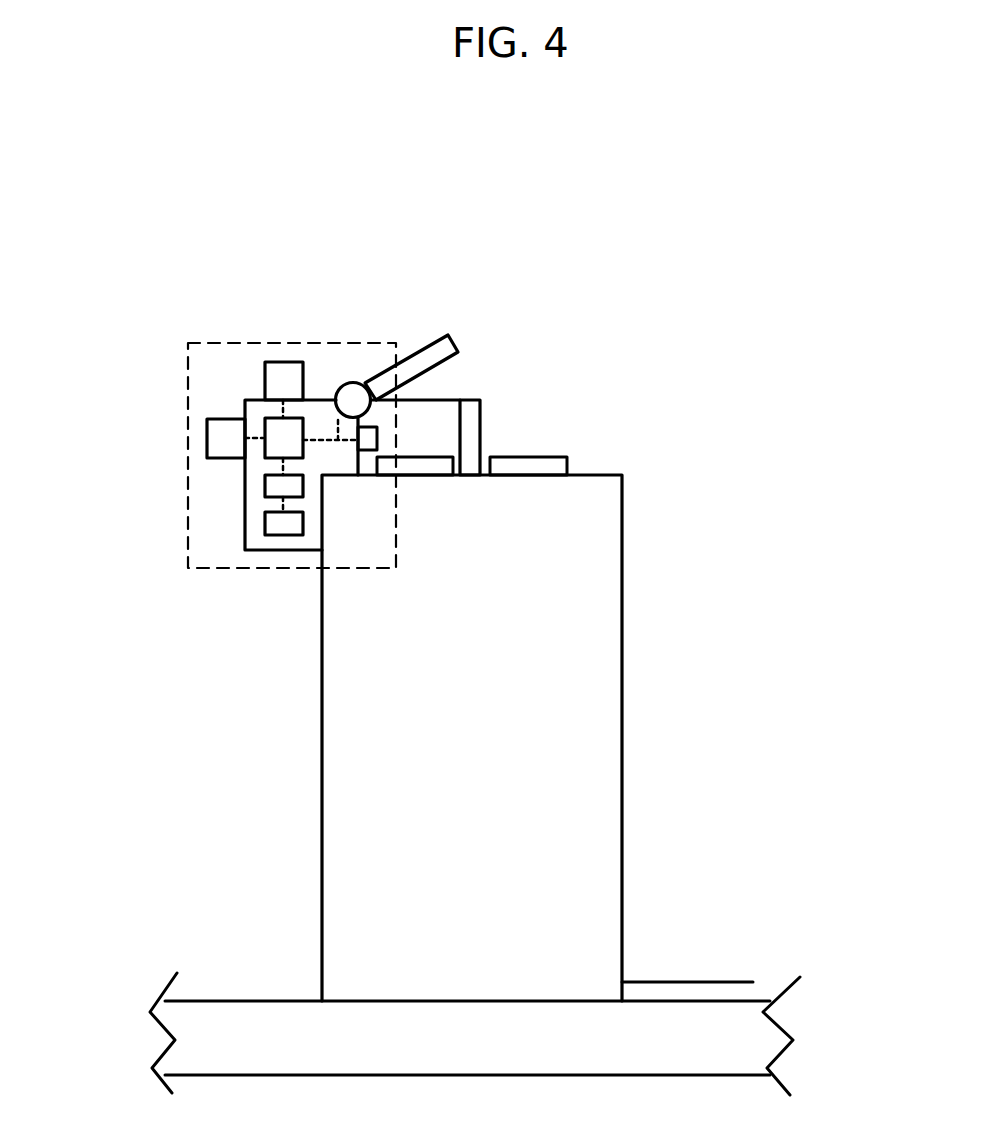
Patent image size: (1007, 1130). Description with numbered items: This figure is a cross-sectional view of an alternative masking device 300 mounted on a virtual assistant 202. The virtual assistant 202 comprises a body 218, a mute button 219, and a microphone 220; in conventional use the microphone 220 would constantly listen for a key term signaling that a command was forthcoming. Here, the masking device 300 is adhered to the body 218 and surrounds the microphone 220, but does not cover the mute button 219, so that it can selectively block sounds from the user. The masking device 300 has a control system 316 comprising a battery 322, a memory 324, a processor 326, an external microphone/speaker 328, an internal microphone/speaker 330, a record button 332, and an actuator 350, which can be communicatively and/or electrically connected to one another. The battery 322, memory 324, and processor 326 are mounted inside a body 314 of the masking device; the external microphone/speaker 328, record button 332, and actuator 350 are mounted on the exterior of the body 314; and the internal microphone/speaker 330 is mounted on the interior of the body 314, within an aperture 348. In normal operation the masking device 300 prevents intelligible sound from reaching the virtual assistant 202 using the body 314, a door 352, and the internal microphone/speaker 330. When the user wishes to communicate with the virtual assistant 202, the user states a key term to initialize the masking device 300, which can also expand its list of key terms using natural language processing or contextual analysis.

The virtual assistant 202 is at (627, 799).
The body 218 is at (622, 680).
The mute button 219 is at (567, 456).
The microphone 220 is at (435, 477).
The masking device 300 is at (492, 426).
The body 314 is at (285, 553).
The control system 316 is at (188, 390).
The battery 322 is at (263, 537).
The memory 324 is at (263, 497).
The processor 326 is at (263, 458).
The external microphone/speaker 328 is at (263, 362).
The internal microphone/speaker 330 is at (378, 438).
The record button 332 is at (207, 438).
The aperture 348 is at (422, 400).
The actuator 350 is at (350, 382).
The door 352 is at (425, 342).